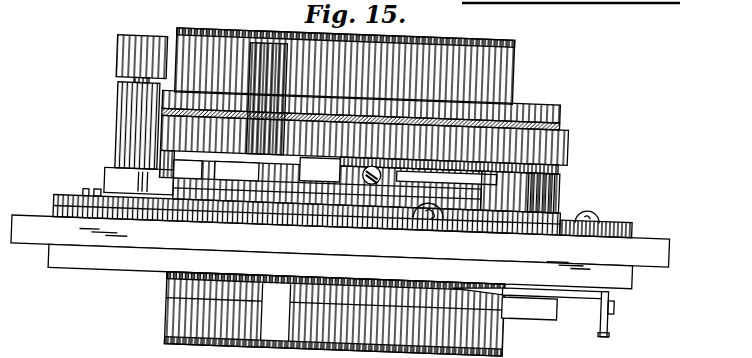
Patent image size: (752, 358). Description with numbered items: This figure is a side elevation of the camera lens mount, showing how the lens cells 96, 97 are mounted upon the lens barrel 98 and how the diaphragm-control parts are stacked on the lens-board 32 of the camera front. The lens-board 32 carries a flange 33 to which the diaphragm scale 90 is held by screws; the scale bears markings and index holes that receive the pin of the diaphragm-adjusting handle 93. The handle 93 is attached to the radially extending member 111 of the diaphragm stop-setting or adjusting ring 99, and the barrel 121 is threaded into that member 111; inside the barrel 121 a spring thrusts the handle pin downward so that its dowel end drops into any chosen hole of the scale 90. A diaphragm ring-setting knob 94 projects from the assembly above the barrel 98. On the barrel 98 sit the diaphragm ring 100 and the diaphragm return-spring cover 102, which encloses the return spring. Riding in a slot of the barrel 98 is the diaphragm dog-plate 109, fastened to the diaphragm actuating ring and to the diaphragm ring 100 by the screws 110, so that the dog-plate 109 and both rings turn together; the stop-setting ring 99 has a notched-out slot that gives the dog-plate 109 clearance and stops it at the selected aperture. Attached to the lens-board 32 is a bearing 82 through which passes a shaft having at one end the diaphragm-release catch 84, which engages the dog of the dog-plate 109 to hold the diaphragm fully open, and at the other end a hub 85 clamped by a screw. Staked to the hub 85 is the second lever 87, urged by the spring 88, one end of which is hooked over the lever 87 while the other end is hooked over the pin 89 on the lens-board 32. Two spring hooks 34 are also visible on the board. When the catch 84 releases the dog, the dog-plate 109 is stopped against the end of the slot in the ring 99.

The lens-board 32 is at (660, 258).
The flange 33 is at (628, 230).
The spring hook 34 is at (432, 213).
The bearing 82 is at (556, 195).
The diaphragm-release catch 84 is at (486, 178).
The hub 85 is at (534, 311).
The second lever 87 is at (611, 325).
The spring 88 is at (587, 298).
The pin 89 is at (448, 288).
The diaphragm scale 90 is at (70, 191).
The diaphragm-adjusting handle 93 is at (117, 56).
The diaphragm ring-setting knob 94 is at (259, 38).
The lens cell 96 is at (513, 75).
The lens cell 97 is at (170, 338).
The lens barrel 98 is at (172, 282).
The diaphragm stop-setting ring 99 is at (235, 188).
The diaphragm ring 100 is at (560, 172).
The diaphragm return-spring cover 102 is at (565, 133).
The diaphragm dog-plate 109 is at (283, 176).
The screws 110 is at (365, 184).
The radially extending member 111 is at (117, 169).
The barrel 121 is at (130, 114).